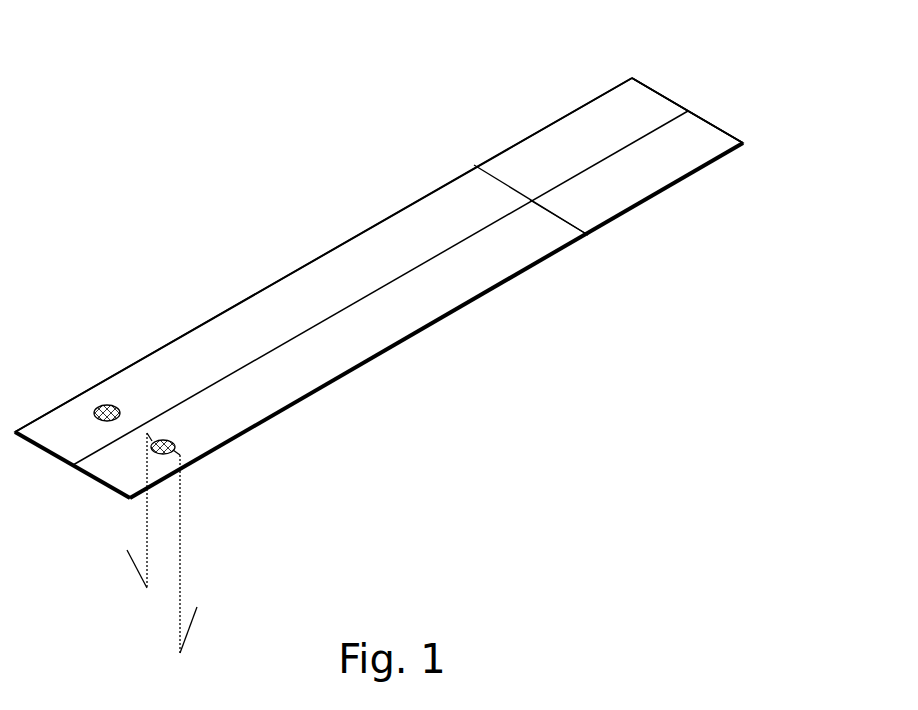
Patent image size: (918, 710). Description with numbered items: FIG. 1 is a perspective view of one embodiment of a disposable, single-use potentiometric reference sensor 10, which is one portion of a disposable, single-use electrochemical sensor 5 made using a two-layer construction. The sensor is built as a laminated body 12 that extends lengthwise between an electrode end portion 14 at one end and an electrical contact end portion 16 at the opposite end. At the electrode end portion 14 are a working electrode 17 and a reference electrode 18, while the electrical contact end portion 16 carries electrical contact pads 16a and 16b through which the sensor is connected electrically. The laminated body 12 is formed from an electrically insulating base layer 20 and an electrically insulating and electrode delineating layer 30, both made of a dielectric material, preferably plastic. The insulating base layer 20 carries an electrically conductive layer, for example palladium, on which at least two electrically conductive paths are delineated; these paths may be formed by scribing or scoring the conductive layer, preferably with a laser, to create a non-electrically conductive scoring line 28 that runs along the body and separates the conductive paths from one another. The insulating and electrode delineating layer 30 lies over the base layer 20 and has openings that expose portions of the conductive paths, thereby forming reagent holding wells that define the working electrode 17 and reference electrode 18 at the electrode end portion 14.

The electrochemical sensor 5 is at (183, 44).
The potentiometric reference sensor 10 is at (482, 268).
The laminated body 12 is at (323, 255).
The electrode end portion 14 is at (147, 491).
The electrical contact end portion 16 is at (615, 98).
The electrical contact pad 16a is at (625, 110).
The electrical contact pad 16b is at (683, 143).
The working electrode 17 is at (92, 417).
The reference electrode 18 is at (175, 441).
The electrically insulating base layer 20 is at (404, 343).
The scoring line 28 is at (623, 150).
The electrically insulating and electrode delineating layer 30 is at (557, 215).